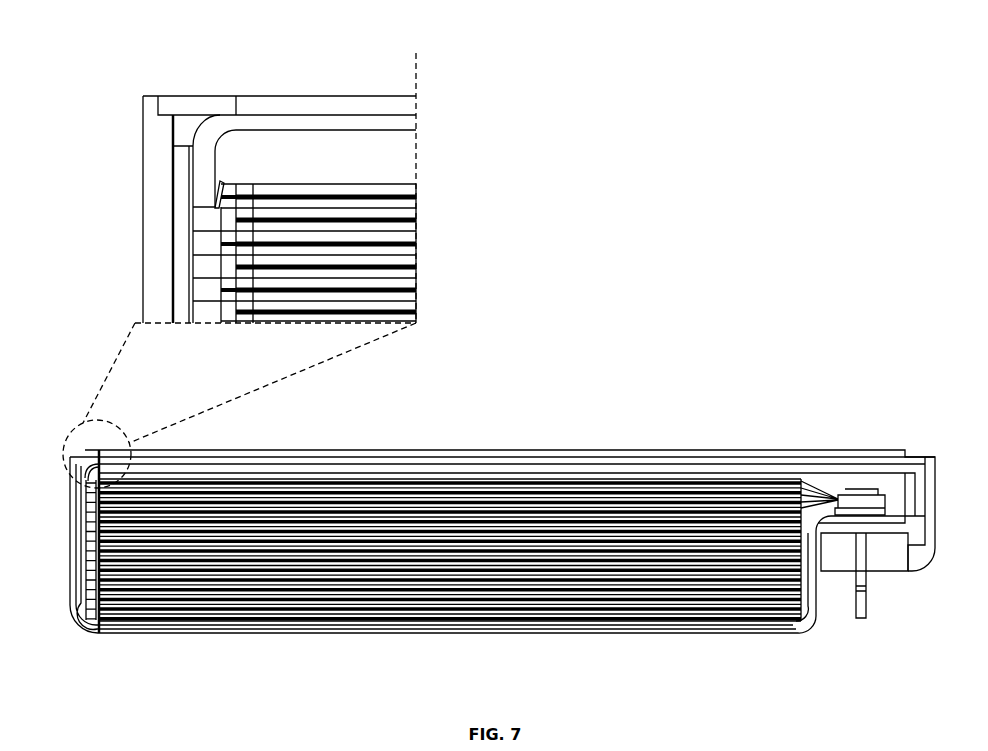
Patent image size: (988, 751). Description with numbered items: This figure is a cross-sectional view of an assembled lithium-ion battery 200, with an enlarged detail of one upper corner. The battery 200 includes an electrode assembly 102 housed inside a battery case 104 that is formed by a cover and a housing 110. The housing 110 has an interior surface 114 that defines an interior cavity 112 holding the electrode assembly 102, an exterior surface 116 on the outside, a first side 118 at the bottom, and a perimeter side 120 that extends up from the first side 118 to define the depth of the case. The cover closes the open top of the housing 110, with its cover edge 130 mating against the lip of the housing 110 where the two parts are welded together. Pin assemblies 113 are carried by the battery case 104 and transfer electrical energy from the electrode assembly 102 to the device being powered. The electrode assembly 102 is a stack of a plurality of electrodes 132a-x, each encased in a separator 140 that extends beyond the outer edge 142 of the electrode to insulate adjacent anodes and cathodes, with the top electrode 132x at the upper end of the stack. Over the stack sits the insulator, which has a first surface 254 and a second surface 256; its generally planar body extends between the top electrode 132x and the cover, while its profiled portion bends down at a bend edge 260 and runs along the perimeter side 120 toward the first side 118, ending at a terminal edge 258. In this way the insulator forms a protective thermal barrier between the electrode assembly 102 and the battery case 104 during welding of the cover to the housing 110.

The electrode assembly 102 is at (360, 587).
The battery case 104 is at (63, 608).
The housing 110 is at (213, 615).
The interior cavity 112 is at (808, 537).
The pin assemblies 113 is at (860, 580).
The interior surface 114 is at (690, 628).
The exterior surface 116 is at (785, 617).
The first side 118 is at (590, 628).
The perimeter side 120 is at (62, 548).
The cover edge 130 is at (152, 88).
The top electrode 132x is at (345, 173).
The plurality of electrodes 132a-x is at (410, 178).
The separator 140 is at (213, 204).
The outer edge 142 is at (215, 308).
The lithium-ion battery 200 is at (722, 197).
The first surface 254 is at (398, 104).
The second surface 256 is at (400, 125).
The terminal edge 258 is at (205, 200).
The bend edge 260 is at (185, 128).